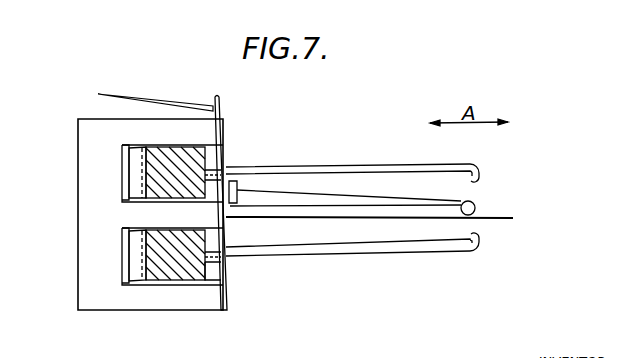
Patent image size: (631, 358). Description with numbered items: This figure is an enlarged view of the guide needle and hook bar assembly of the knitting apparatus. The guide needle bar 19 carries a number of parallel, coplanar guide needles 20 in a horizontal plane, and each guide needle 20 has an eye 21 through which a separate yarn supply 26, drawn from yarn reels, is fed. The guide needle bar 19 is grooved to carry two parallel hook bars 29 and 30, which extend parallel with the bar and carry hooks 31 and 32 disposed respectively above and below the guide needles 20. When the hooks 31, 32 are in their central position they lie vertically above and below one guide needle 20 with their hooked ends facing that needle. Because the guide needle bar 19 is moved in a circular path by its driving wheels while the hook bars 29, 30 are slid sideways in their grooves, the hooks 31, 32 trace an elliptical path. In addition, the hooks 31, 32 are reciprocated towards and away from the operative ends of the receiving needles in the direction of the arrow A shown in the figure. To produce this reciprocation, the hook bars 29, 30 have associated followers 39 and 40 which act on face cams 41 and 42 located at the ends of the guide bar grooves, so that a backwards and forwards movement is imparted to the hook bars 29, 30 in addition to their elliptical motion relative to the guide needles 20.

The guide needle bar 19 is at (115, 125).
The yarn supply 26 is at (165, 104).
The hook bar 29 is at (220, 140).
The guide needle 20 is at (293, 208).
The hook 31 is at (352, 166).
The hook 32 is at (342, 258).
The eye 21 is at (472, 202).
The hook bar 30 is at (167, 273).
The follower 39 is at (136, 165).
The follower 40 is at (137, 265).
The face cam 41 is at (122, 148).
The face cam 42 is at (133, 235).